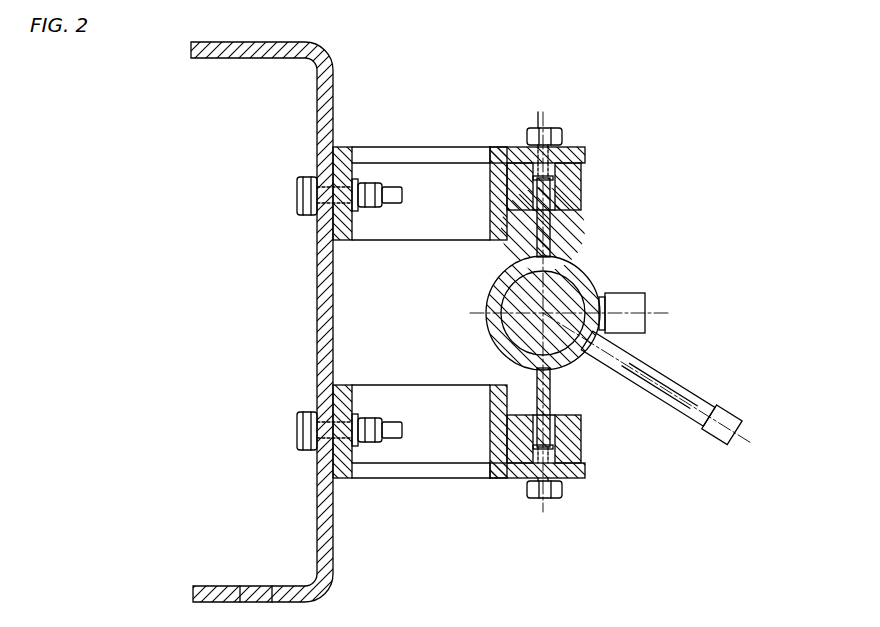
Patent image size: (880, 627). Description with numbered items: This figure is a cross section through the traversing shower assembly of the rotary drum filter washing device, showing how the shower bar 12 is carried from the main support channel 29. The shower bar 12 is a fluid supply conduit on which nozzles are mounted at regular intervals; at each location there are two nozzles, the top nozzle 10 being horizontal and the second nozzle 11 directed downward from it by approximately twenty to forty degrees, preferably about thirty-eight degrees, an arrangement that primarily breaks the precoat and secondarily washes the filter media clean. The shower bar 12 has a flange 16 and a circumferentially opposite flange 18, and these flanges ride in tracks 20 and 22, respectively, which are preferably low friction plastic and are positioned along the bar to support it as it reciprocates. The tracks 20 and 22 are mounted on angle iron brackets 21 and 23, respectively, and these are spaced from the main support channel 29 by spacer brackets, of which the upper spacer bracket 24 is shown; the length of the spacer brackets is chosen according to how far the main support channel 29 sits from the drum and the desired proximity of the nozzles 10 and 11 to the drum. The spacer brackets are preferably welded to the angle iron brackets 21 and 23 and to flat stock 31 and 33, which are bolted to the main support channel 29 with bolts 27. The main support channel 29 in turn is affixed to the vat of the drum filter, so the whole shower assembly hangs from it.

The nozzle 10 is at (625, 297).
The nozzle 11 is at (728, 418).
The shower bar 12 is at (573, 272).
The flange 16 is at (436, 452).
The flange 18 is at (538, 241).
The track 20 is at (565, 183).
The angle iron bracket 21 is at (503, 160).
The track 22 is at (580, 425).
The angle iron bracket 23 is at (520, 470).
The spacer bracket 24 is at (415, 147).
The bolt 27 is at (297, 194).
The main support channel 29 is at (298, 42).
The flat stock 31 is at (343, 232).
The flat stock 33 is at (340, 385).